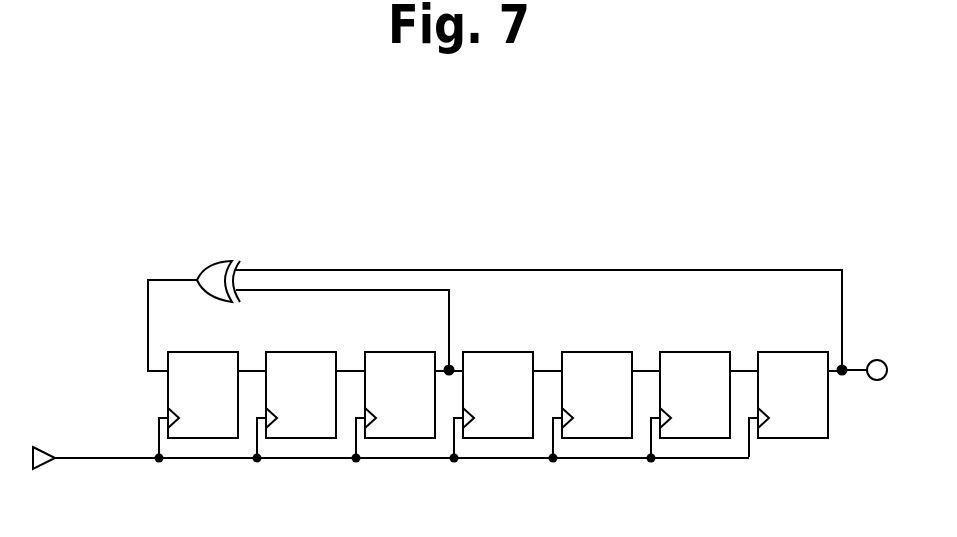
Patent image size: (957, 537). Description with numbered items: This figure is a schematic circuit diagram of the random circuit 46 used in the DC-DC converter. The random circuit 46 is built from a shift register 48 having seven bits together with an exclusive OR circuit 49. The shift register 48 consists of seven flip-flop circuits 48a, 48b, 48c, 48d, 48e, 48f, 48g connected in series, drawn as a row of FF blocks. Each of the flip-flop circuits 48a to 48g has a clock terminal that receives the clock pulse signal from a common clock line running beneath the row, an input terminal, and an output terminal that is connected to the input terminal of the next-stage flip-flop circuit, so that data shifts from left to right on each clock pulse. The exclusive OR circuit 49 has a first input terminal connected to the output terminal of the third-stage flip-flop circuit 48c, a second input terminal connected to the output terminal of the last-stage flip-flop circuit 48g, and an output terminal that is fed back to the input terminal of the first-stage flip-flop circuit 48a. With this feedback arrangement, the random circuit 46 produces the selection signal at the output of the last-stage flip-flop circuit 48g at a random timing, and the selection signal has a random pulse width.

The random circuit 46 is at (667, 198).
The shift register 48 is at (641, 261).
The first-stage flip-flop circuit 48a is at (175, 352).
The flip-flop circuit 48b is at (273, 352).
The third-stage flip-flop circuit 48c is at (372, 352).
The flip-flop circuit 48d is at (470, 352).
The flip-flop circuit 48e is at (569, 352).
The flip-flop circuit 48f is at (667, 352).
The last-stage flip-flop circuit 48g is at (765, 352).
The exclusive OR circuit 49 is at (218, 260).